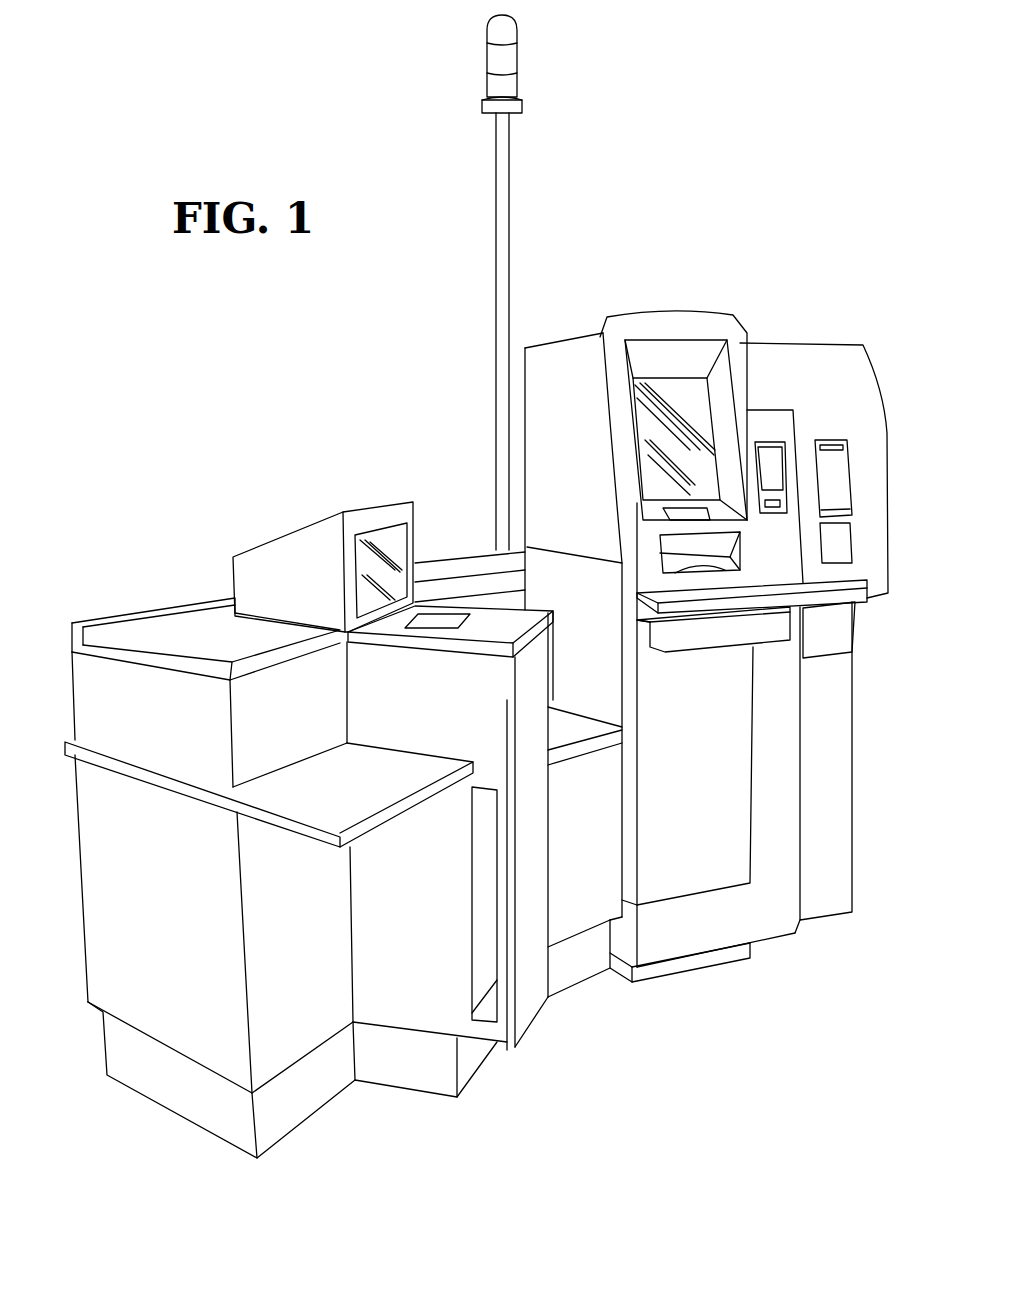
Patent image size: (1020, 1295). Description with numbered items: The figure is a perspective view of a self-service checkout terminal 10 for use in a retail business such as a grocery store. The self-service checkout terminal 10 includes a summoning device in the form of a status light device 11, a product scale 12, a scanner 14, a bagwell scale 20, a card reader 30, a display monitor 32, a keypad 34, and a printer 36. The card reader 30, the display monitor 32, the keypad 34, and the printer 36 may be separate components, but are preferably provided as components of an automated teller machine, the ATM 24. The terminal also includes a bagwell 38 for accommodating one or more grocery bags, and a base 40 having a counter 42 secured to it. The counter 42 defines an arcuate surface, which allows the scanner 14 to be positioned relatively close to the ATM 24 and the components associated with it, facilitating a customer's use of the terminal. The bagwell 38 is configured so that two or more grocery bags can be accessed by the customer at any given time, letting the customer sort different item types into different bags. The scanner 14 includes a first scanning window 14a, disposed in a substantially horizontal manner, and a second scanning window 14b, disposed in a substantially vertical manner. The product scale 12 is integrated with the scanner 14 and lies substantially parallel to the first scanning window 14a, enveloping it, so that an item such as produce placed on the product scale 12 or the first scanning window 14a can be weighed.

The self-service checkout terminal 10 is at (760, 152).
The status light device 11 is at (518, 62).
The product scale 12 is at (497, 623).
The scanner 14 is at (370, 507).
The first scanning window 14a is at (437, 618).
The second scanning window 14b is at (367, 592).
The bagwell scale 20 is at (577, 748).
The automated teller machine (ATM) 24 is at (833, 370).
The card reader 30 is at (773, 457).
The display monitor 32 is at (657, 437).
The keypad 34 is at (670, 513).
The printer 36 is at (838, 543).
The bagwell 38 is at (580, 668).
The base 40 is at (165, 1017).
The counter 42 is at (193, 638).